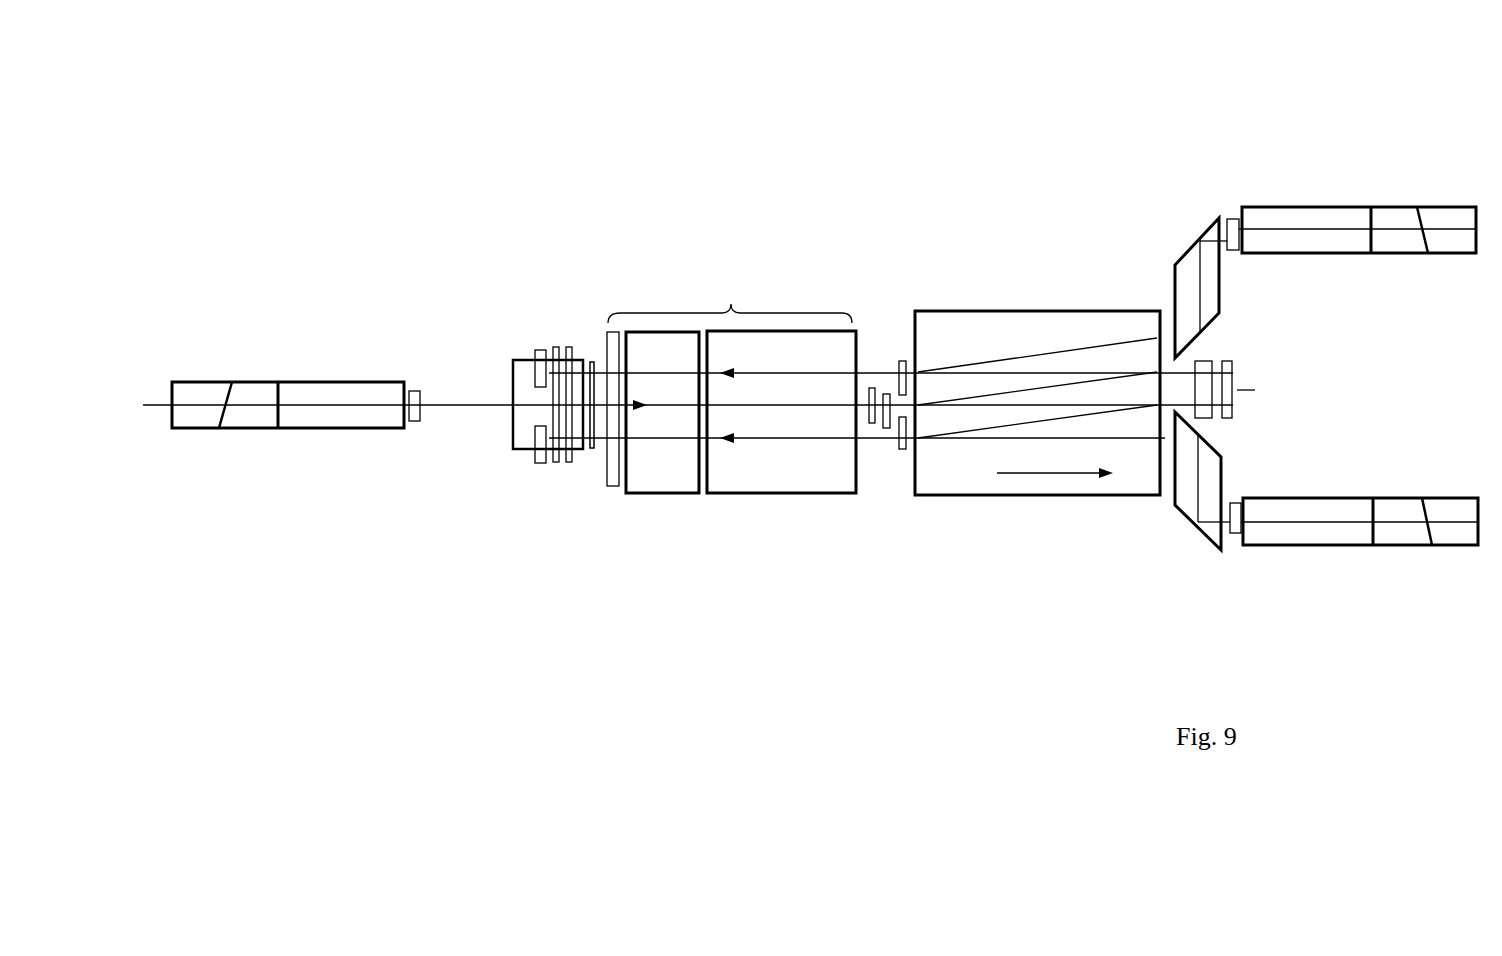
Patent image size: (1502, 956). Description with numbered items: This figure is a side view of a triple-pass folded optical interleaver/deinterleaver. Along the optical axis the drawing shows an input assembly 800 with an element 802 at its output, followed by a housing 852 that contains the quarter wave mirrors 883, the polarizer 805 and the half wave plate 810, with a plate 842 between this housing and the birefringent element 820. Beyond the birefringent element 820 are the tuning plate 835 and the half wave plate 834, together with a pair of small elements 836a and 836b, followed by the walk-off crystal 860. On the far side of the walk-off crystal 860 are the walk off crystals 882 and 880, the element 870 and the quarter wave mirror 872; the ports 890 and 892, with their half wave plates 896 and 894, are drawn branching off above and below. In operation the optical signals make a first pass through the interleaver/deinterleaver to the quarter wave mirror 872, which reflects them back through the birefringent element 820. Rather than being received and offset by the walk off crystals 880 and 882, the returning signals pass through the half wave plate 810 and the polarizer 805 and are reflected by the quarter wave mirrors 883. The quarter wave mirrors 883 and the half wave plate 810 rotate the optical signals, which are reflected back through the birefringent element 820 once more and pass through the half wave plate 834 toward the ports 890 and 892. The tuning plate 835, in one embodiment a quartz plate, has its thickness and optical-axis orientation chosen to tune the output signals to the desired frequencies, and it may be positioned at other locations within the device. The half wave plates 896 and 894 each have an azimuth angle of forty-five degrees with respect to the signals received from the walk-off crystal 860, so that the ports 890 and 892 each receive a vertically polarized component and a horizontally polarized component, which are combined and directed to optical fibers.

The diode laser source 800 is at (342, 378).
The collimating lens 802 is at (415, 387).
The beam combiner housing 852 is at (517, 357).
The quarter wave mirrors 883 is at (535, 385).
The polarizer 805 is at (557, 358).
The half wave plate 810 is at (570, 348).
The thin plate 842 is at (593, 353).
The birefringent element 820 is at (731, 304).
The tuning plate 835 is at (872, 432).
The half wave plate 834 is at (887, 432).
The mirror 836a is at (903, 360).
The mirror 836b is at (903, 452).
The walk-off crystal 860 is at (1038, 310).
The walk off crystal 882 is at (1173, 262).
The walk off crystal 880 is at (1173, 508).
The half wave plate 896 is at (1232, 218).
The half wave plate 894 is at (1237, 547).
The port 890 is at (1305, 205).
The port 892 is at (1308, 548).
The output lens pair 870 is at (1203, 353).
The quarter wave mirror 872 is at (1237, 390).